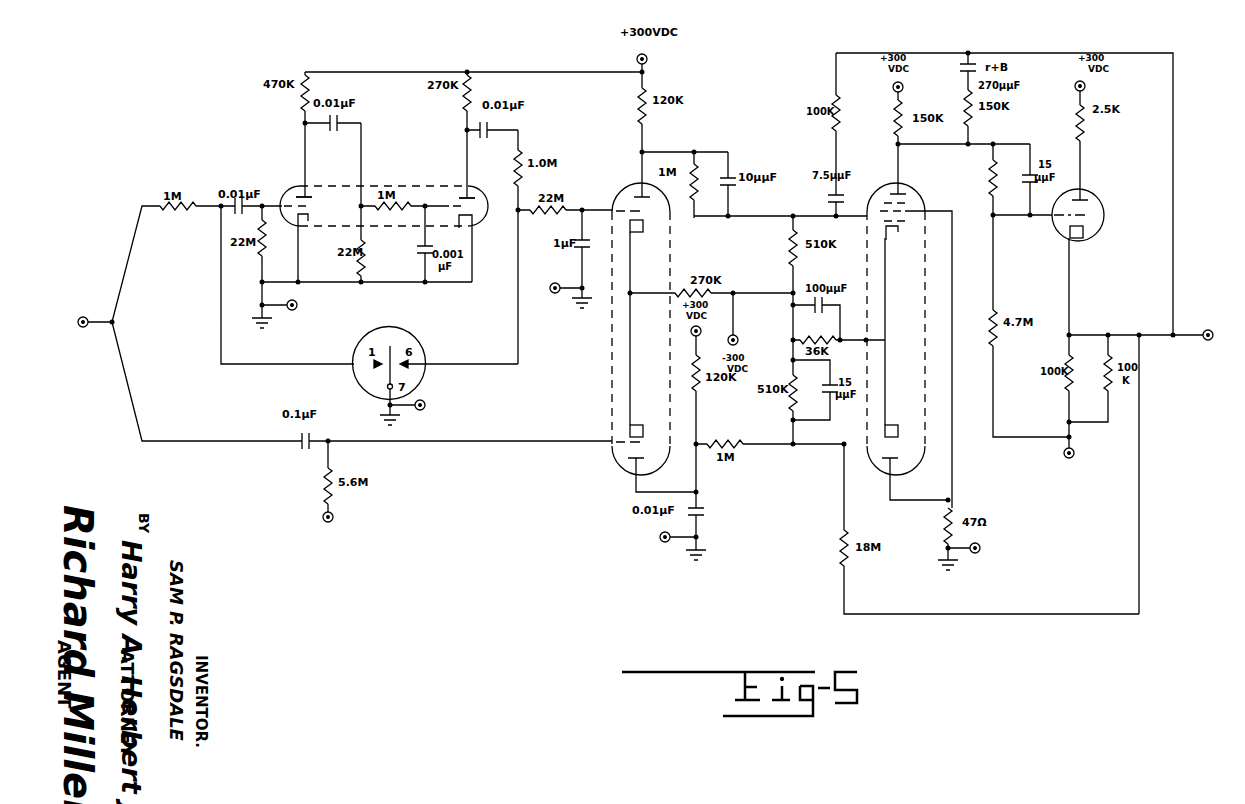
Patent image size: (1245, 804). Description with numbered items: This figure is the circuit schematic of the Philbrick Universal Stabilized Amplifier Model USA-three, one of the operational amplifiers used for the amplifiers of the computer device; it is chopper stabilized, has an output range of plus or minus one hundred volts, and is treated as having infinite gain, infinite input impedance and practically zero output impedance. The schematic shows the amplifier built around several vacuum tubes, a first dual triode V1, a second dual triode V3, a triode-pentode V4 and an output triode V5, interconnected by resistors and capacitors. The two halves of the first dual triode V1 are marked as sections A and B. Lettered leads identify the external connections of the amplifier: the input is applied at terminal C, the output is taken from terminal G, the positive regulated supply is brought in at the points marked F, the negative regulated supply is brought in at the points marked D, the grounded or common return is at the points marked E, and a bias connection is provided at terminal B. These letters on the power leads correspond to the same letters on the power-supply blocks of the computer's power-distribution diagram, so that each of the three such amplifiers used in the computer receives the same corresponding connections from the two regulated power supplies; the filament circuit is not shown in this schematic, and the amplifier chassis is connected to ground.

The first dual triode 12AX7A (sections A and B) V1 is at (384, 193).
The second dual triode 12AX7A V3 is at (666, 329).
The triode-pentode 6U8 V4 is at (910, 329).
The triode 6S4A V5 is at (1057, 222).
The first section of tube V1 A is at (298, 184).
The second section of tube V1 / bias terminal B is at (403, 351).
The input terminal C is at (82, 321).
The -300 VDC supply terminal D is at (912, 398).
The ground terminal E is at (640, 418).
The +300 VDC supply terminal F is at (853, 192).
The output terminal G is at (1207, 332).